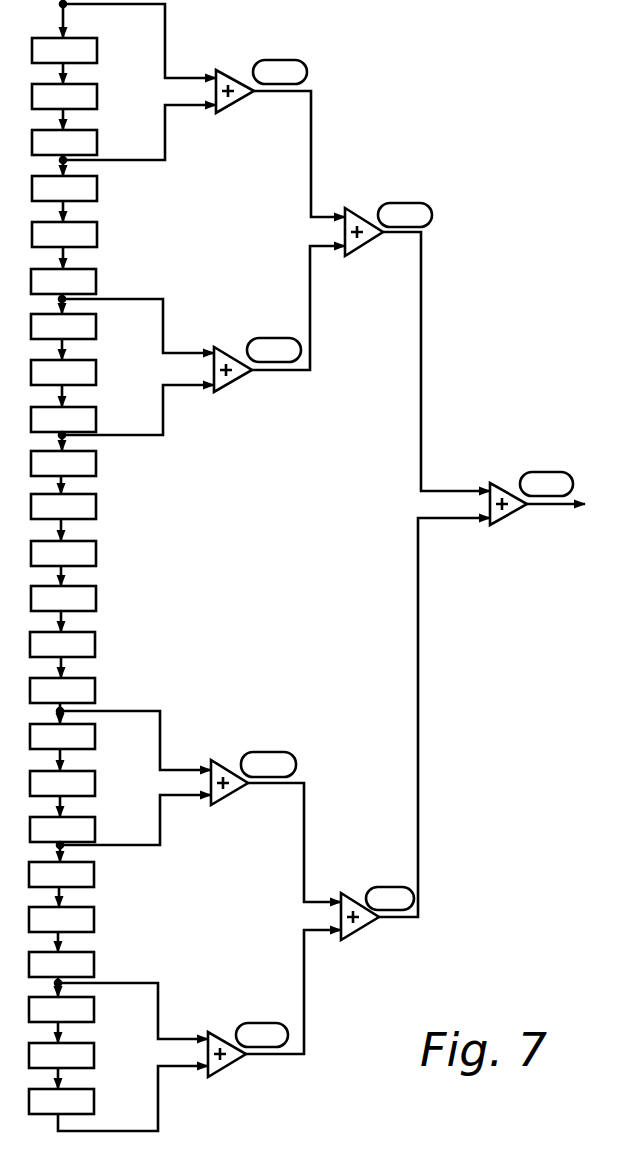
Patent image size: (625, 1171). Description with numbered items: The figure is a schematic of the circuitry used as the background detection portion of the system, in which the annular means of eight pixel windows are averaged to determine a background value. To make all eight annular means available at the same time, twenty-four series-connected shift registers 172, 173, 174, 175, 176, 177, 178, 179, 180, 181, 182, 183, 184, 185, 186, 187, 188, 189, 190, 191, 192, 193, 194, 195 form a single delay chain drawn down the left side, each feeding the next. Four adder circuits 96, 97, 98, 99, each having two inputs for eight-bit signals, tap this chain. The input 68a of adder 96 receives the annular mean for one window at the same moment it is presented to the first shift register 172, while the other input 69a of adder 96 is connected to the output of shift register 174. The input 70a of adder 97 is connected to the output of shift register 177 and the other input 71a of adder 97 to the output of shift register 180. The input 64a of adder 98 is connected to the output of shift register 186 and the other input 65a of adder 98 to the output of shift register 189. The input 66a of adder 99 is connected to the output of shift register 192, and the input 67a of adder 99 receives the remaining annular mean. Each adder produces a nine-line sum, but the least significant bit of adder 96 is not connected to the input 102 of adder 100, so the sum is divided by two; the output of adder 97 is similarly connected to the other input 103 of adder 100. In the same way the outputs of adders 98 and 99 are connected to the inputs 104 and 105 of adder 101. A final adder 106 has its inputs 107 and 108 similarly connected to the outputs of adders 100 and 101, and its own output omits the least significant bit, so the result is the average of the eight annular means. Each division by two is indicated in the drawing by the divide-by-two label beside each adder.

The shift register 172 is at (97, 50).
The shift register 173 is at (97, 96).
The shift register 174 is at (97, 142).
The shift register 175 is at (97, 188).
The shift register 176 is at (97, 234).
The shift register 177 is at (96, 281).
The shift register 178 is at (96, 326).
The shift register 179 is at (96, 372).
The shift register 180 is at (96, 419).
The shift register 181 is at (96, 463).
The shift register 182 is at (96, 506).
The shift register 183 is at (96, 553).
The shift register 184 is at (96, 598).
The shift register 185 is at (95, 644).
The shift register 186 is at (95, 690).
The shift register 187 is at (95, 736).
The shift register 188 is at (95, 783).
The shift register 189 is at (95, 829).
The shift register 190 is at (94, 874).
The shift register 191 is at (94, 919).
The shift register 192 is at (94, 964).
The shift register 193 is at (94, 1009).
The shift register 194 is at (94, 1055).
The shift register 195 is at (94, 1101).
The adder circuit 96 is at (240, 106).
The adder circuit 97 is at (236, 386).
The adder circuit 98 is at (235, 800).
The adder circuit 99 is at (233, 1069).
The adder 100 is at (367, 244).
The adder 101 is at (367, 933).
The adder 106 is at (512, 520).
The input of adder 96 68a is at (178, 74).
The input of adder 96 69a is at (181, 109).
The input of adder 97 70a is at (180, 352).
The input of adder 97 71a is at (180, 390).
The input of adder 98 64a is at (174, 768).
The input of adder 98 65a is at (180, 800).
The input of adder 99 66a is at (175, 1038).
The input of adder 99 67a is at (176, 1071).
The input of adder 100 102 is at (322, 214).
The input of adder 100 103 is at (318, 250).
The input of adder 101 104 is at (305, 900).
The input of adder 101 105 is at (310, 935).
The input of adder 106 107 is at (440, 489).
The input of adder 106 108 is at (443, 526).